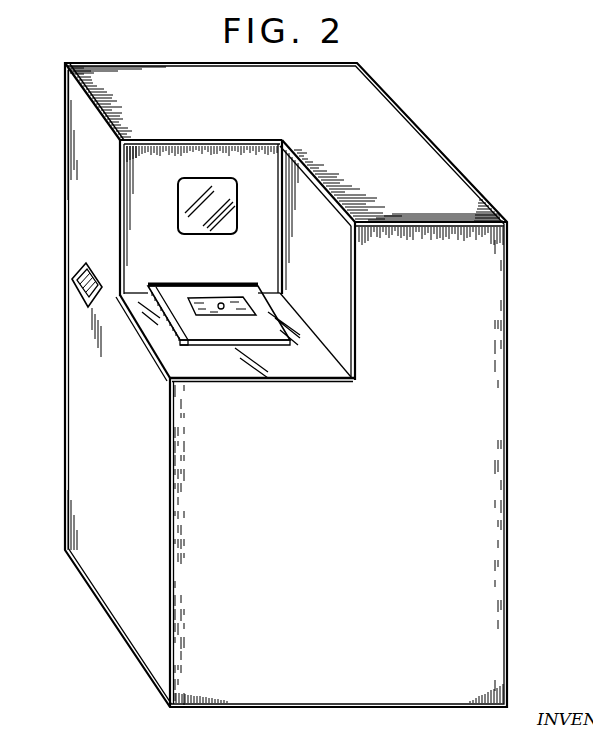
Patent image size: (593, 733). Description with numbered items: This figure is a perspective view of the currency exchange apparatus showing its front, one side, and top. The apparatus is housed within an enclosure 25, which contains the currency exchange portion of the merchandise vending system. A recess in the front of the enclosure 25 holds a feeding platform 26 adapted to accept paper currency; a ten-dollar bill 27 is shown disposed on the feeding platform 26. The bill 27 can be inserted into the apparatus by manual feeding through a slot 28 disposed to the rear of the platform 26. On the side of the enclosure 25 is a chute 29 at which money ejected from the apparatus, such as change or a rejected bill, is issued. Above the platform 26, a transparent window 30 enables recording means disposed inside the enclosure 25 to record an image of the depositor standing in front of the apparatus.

The enclosure 25 is at (497, 402).
The feeding platform 26 is at (210, 333).
The $10 bill 27 is at (203, 297).
The slot 28 is at (231, 284).
The chute 29 is at (72, 284).
The transparent window 30 is at (199, 180).